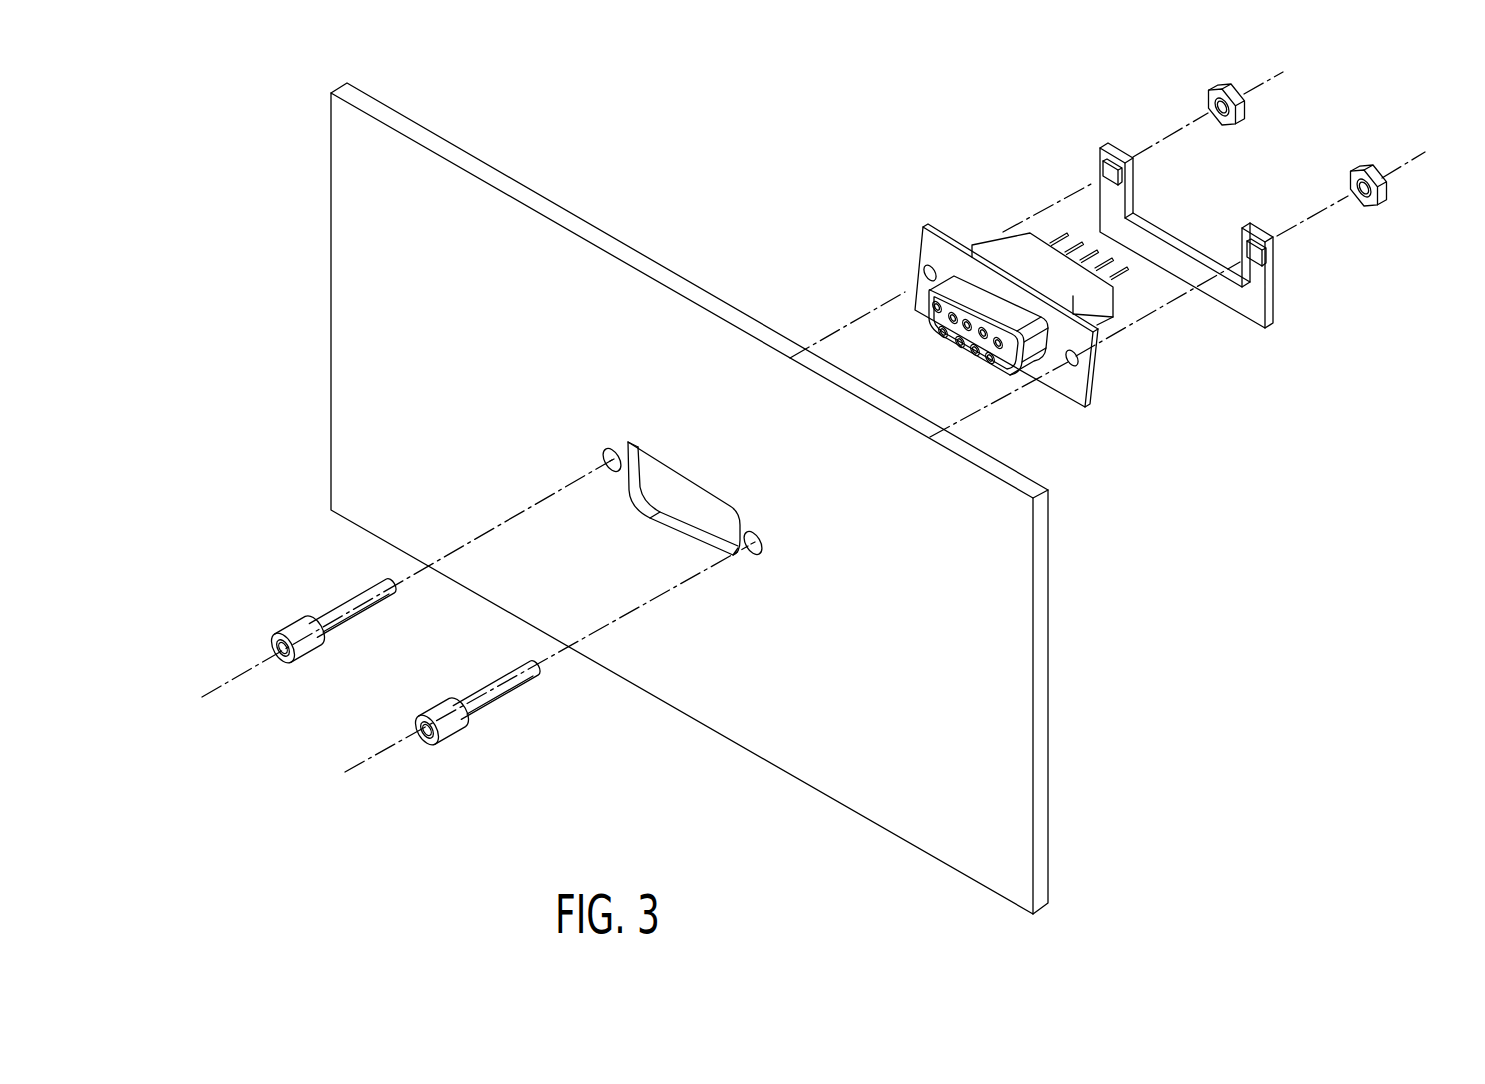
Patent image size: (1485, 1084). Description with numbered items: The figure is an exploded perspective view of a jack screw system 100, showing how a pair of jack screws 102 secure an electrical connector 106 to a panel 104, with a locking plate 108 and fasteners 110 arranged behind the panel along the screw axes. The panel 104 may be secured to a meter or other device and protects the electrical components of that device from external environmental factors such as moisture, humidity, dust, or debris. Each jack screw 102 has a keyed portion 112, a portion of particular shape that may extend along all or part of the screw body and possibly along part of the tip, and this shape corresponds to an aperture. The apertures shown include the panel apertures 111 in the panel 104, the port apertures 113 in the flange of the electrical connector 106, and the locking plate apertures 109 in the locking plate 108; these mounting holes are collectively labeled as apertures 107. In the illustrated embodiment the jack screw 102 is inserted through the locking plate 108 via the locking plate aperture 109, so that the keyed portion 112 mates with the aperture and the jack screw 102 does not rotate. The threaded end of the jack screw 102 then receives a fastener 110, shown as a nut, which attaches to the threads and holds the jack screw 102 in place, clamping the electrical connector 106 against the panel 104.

The jack screw system 100 is at (168, 114).
The jack screw 102 is at (512, 718).
The panel 104 is at (1068, 694).
The electrical connector 106 is at (1122, 412).
The mounting holes 107 is at (894, 319).
The locking plate 108 is at (1262, 340).
The locking plate aperture 109 is at (1100, 170).
The fastener 110 is at (1407, 212).
The panel aperture 111 is at (606, 458).
The keyed portion 112 is at (341, 603).
The port aperture 113 is at (926, 272).